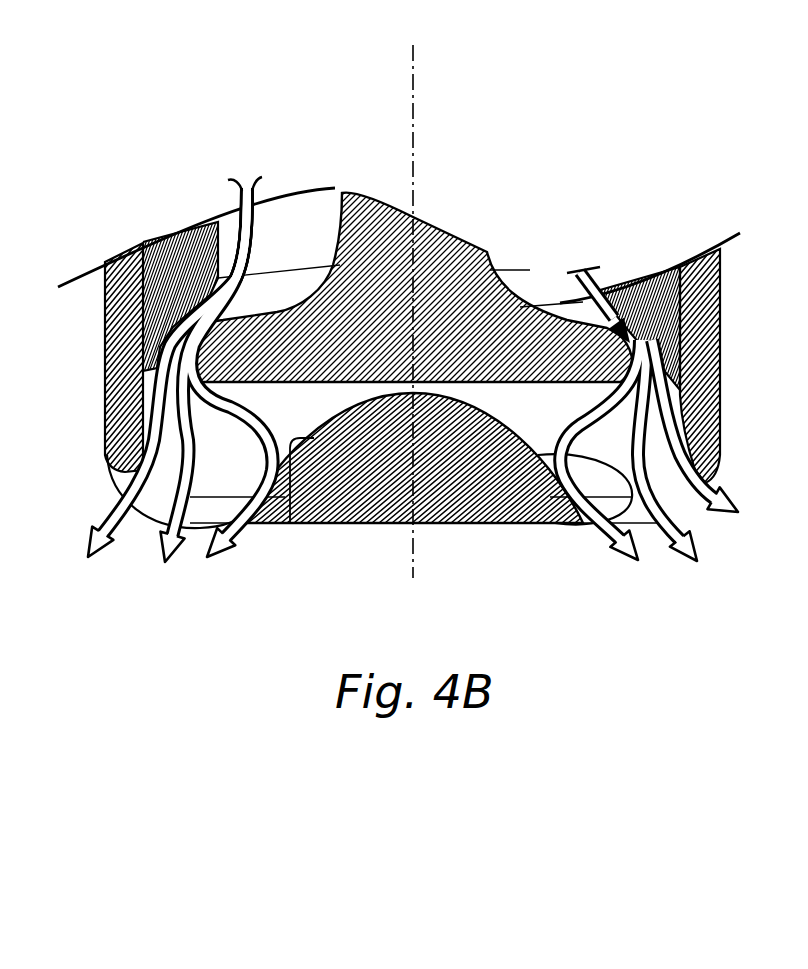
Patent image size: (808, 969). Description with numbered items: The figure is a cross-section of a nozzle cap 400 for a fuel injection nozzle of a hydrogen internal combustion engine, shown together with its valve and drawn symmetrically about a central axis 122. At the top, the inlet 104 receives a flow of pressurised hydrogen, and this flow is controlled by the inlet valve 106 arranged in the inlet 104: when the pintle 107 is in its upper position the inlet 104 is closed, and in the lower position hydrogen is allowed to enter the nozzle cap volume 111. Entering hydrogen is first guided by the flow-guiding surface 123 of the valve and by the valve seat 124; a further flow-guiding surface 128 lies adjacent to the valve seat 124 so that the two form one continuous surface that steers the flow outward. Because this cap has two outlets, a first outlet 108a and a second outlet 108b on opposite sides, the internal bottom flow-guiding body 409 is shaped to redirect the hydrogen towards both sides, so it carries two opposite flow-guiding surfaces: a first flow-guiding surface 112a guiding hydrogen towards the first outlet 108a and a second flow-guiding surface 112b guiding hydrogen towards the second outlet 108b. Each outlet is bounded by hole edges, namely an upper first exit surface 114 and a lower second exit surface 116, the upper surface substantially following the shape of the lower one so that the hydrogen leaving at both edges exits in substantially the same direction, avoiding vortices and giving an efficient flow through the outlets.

The nozzle cap 400 is at (309, 566).
The inlet 104 is at (196, 320).
The inlet valve 106 is at (341, 223).
The pintle 107 is at (347, 322).
The central axis 122 is at (413, 120).
The valve seat 124 is at (635, 350).
The flow-guiding surface 123 is at (645, 335).
The flow-guiding surface 128 is at (690, 360).
The first outlet 108a is at (661, 487).
The second outlet 108b is at (178, 484).
The nozzle cap volume 111 is at (318, 420).
The internal bottom flow-guiding body 409 is at (487, 477).
The first exit surface 114 is at (717, 482).
The first flow-guiding surface 112a is at (645, 556).
The second flow-guiding surface 112b is at (283, 525).
The second exit surface 116 is at (590, 523).